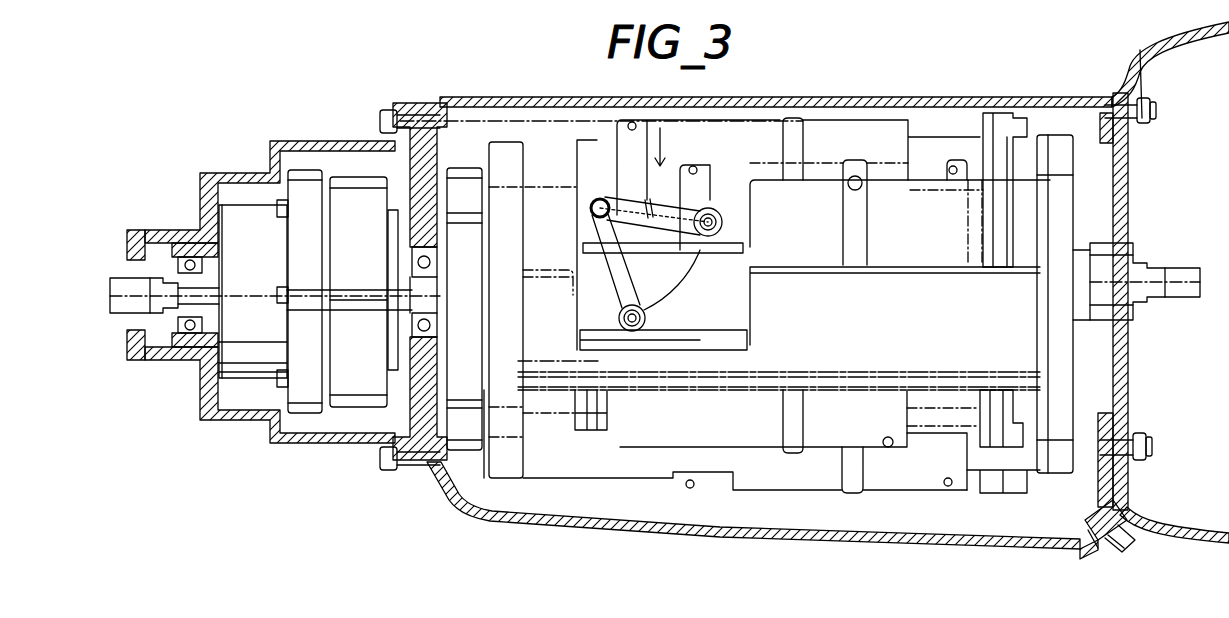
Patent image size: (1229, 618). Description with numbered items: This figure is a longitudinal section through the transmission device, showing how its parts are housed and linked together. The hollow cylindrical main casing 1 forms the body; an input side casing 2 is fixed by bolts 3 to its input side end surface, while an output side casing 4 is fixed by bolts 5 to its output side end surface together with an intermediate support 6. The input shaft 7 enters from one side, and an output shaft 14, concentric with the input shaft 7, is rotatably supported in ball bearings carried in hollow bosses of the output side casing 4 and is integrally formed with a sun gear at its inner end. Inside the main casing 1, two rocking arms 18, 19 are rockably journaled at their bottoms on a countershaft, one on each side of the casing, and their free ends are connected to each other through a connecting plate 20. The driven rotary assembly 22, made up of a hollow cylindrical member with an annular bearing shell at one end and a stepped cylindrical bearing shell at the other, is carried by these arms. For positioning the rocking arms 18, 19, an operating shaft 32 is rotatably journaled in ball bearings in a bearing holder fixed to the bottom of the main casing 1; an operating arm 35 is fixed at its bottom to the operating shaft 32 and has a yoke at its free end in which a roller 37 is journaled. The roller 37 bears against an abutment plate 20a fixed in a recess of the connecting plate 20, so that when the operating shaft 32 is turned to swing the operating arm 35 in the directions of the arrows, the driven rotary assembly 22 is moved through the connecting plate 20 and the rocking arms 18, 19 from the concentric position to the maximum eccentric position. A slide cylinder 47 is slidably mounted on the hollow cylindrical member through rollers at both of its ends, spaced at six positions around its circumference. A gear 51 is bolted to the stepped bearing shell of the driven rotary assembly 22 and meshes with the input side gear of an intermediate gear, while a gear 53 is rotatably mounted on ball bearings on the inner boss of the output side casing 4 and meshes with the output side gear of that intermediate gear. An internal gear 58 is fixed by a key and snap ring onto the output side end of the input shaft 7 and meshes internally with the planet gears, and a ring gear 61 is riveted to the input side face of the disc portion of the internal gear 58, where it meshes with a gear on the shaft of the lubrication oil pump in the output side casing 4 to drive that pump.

The main casing 1 is at (918, 542).
The input side casing 2 is at (1172, 537).
The bolts 3 is at (1138, 449).
The output side casing 4 is at (273, 445).
The bolts 5 is at (378, 447).
The intermediate support 6 is at (418, 462).
The input shaft 7 is at (1168, 297).
The output shaft 14 is at (130, 305).
The rocking arm 18 is at (1052, 135).
The rocking arm 19 is at (513, 142).
The connecting plate 20 is at (810, 180).
The abutment plate 20a is at (748, 180).
The driven rotary assembly 22 is at (872, 113).
The operating shaft 32 is at (598, 198).
The operating arm 35 is at (642, 215).
The roller 37 is at (712, 207).
The slide cylinder 47 is at (728, 450).
The gear 51 is at (465, 168).
The gear 53 is at (305, 170).
The internal gear 58 is at (358, 177).
The ring gear 61 is at (375, 420).